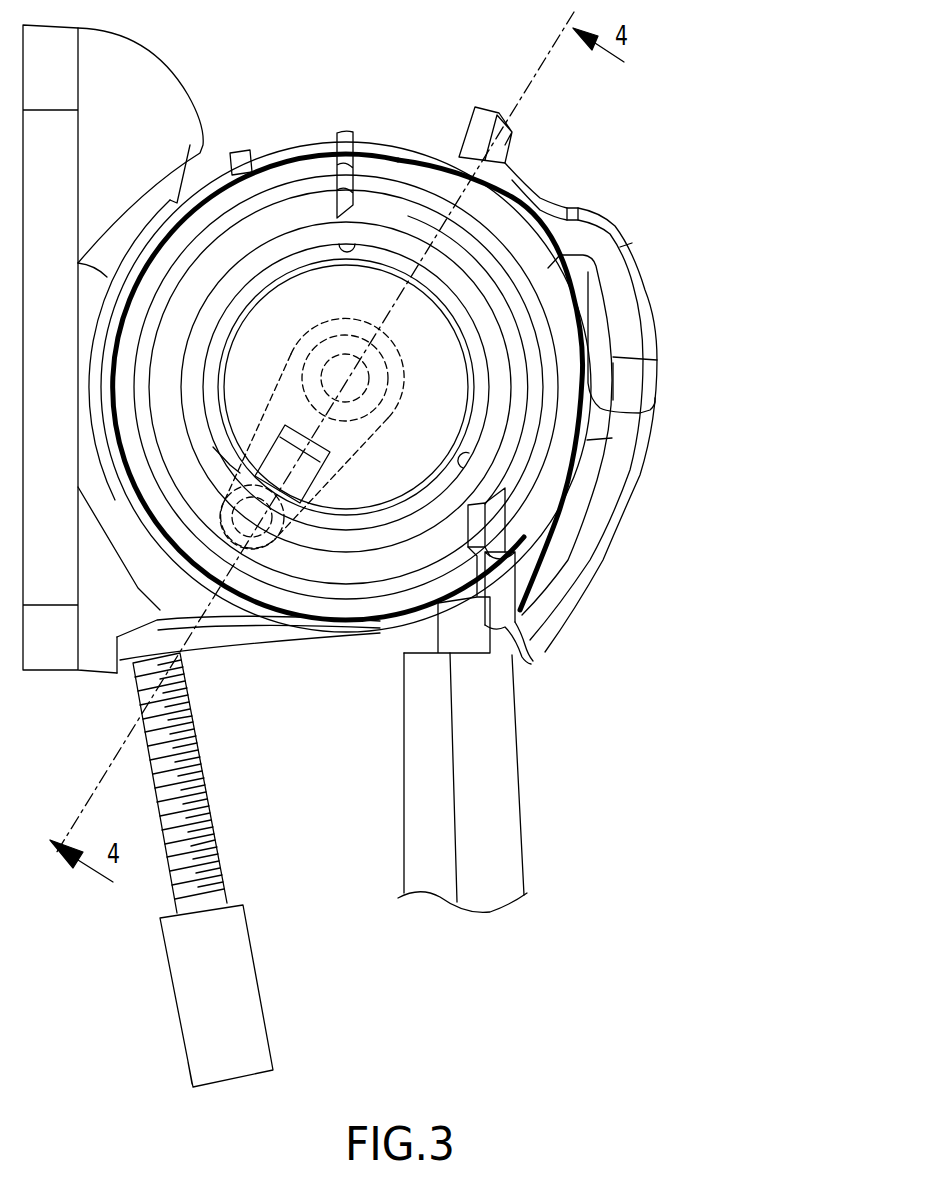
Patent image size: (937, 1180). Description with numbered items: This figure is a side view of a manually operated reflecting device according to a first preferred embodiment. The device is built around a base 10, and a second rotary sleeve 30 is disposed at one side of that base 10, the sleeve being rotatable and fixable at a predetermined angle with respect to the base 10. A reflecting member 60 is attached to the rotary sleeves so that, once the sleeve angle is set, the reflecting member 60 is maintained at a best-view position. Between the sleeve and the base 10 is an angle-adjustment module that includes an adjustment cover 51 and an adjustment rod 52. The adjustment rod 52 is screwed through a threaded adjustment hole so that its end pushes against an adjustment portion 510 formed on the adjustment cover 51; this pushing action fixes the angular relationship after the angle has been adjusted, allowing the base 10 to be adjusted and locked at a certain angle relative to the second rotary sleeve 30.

The base 10 is at (145, 63).
The second rotary sleeve 30 is at (337, 608).
The adjustment cover 51 is at (612, 492).
The adjustment portion 510 is at (479, 128).
The adjustment rod 52 is at (178, 985).
The reflecting member 60 is at (510, 797).